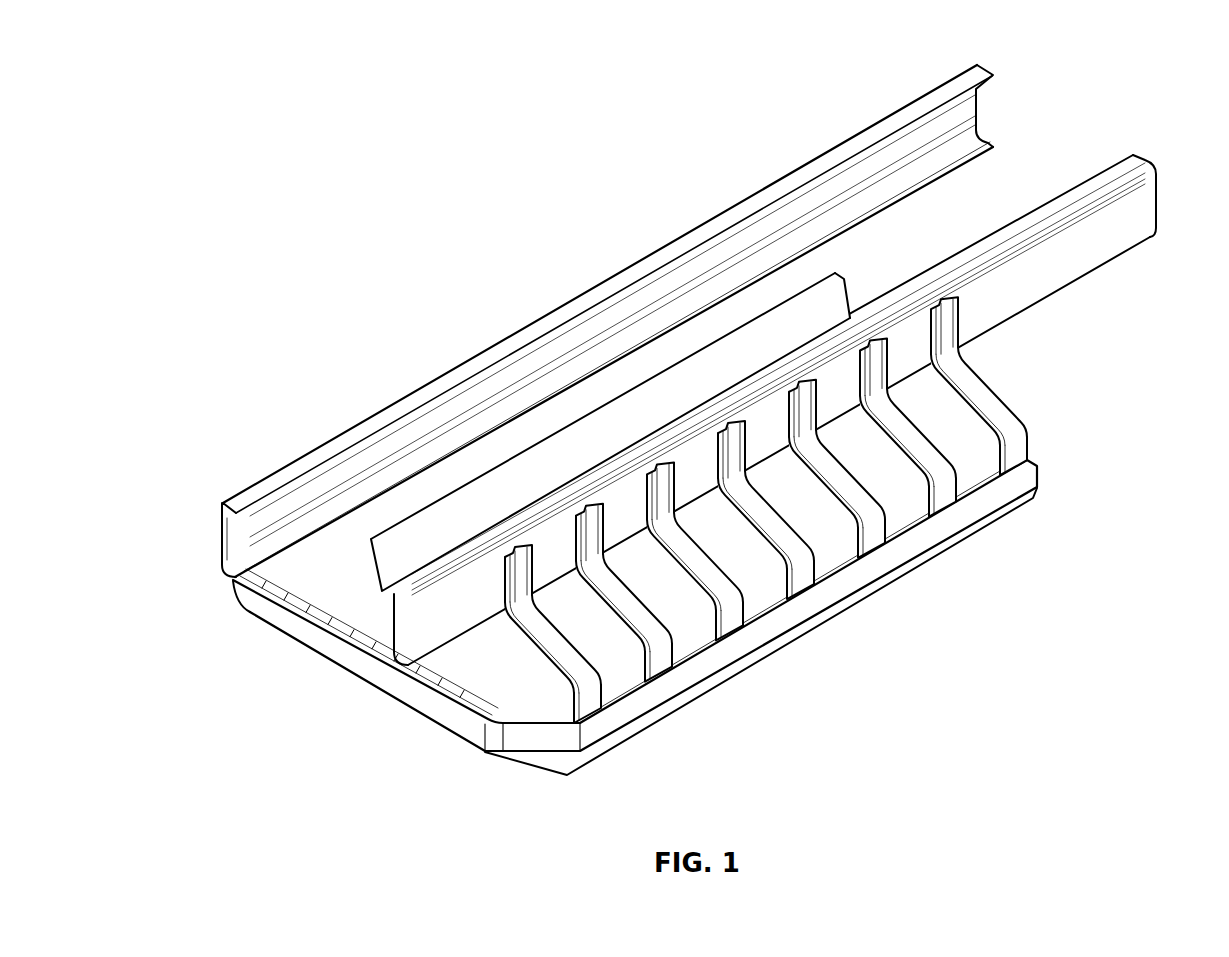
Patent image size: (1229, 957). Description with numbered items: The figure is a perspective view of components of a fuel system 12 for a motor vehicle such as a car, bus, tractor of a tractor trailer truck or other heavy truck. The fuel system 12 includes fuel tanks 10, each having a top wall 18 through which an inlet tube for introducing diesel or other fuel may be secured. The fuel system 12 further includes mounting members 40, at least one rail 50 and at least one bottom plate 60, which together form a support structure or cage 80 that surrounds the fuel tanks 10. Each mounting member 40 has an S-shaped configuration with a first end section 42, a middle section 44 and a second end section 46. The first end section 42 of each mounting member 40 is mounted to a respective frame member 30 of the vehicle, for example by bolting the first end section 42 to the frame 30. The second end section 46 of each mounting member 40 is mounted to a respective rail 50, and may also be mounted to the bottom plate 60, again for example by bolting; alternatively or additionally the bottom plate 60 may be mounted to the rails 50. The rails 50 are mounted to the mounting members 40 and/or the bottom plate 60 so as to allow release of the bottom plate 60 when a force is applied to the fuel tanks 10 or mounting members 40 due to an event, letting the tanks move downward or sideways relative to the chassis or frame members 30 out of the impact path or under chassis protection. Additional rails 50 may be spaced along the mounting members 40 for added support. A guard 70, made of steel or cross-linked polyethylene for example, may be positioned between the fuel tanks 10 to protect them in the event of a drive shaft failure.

The fuel tank 10 is at (687, 420).
The fuel system 12 is at (691, 360).
The top wall 18 is at (792, 262).
The frame member 30 is at (905, 108).
The mounting member 40 is at (819, 512).
The first end section 42 is at (668, 486).
The middle section 44 is at (698, 556).
The second end section 46 is at (738, 628).
The rail 50 is at (1055, 470).
The bottom plate 60 is at (652, 745).
The guard 70 is at (852, 288).
The support structure or cage 80 is at (714, 420).